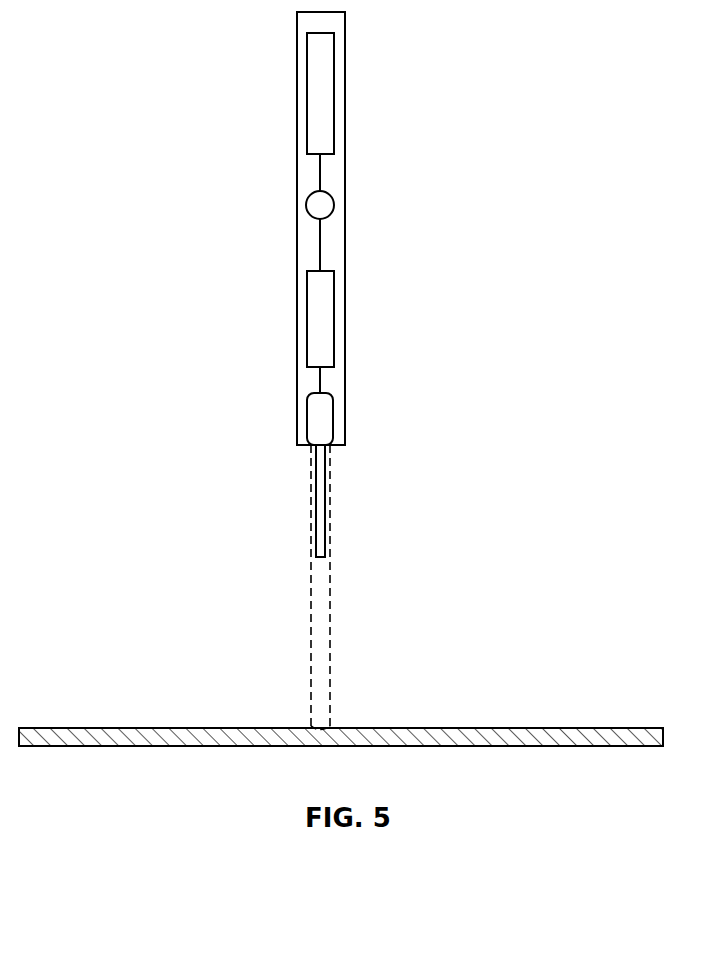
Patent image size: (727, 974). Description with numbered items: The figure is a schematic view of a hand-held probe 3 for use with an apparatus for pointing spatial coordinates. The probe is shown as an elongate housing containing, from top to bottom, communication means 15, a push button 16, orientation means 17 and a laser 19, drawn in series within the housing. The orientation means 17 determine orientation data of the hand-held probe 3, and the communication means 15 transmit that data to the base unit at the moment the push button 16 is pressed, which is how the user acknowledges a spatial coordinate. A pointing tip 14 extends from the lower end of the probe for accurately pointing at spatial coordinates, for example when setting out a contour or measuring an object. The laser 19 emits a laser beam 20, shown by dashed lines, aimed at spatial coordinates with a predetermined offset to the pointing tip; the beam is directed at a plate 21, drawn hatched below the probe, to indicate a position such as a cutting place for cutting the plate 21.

The hand-held probe 3 is at (347, 33).
The communication means 15 is at (335, 79).
The push button 16 is at (334, 199).
The orientation means 17 is at (335, 303).
The laser 19 is at (334, 421).
The pointing tip 14 is at (325, 512).
The laser beam 20 is at (312, 617).
The plate 21 is at (498, 728).